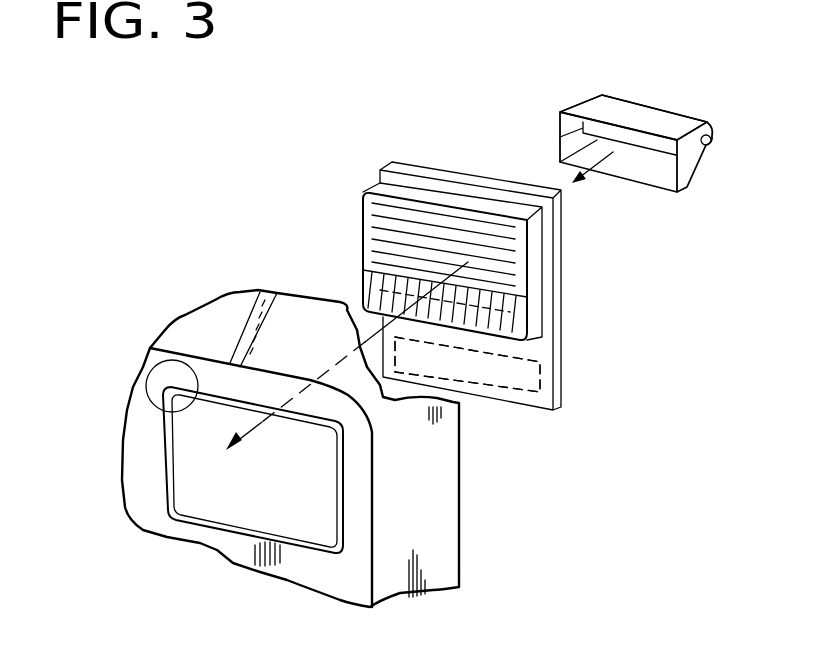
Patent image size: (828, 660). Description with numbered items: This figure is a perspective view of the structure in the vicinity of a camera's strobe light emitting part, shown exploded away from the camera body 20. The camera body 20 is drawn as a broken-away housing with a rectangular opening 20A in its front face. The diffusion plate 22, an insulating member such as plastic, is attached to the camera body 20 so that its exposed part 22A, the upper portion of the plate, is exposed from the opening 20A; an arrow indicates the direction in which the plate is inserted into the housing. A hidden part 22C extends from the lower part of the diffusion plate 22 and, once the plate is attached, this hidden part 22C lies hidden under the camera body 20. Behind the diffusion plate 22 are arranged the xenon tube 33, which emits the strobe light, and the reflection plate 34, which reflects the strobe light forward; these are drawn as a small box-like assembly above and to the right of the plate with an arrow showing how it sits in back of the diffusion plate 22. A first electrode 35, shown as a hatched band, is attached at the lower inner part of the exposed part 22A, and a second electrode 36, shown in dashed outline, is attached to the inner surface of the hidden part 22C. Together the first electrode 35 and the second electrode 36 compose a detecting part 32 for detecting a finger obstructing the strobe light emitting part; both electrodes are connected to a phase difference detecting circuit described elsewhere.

The camera body 20 is at (430, 532).
The opening 20A is at (140, 372).
The diffusion plate 22 is at (378, 162).
The exposed part 22A is at (453, 228).
The hidden part 22C is at (563, 360).
The detecting part 32 is at (490, 364).
The xenon tube 33 is at (648, 135).
The reflection plate 34 is at (605, 110).
The first electrode 35 is at (527, 314).
The second electrode 36 is at (563, 383).